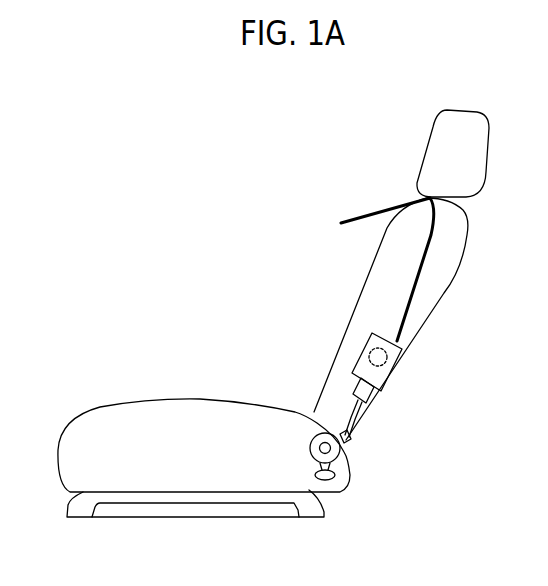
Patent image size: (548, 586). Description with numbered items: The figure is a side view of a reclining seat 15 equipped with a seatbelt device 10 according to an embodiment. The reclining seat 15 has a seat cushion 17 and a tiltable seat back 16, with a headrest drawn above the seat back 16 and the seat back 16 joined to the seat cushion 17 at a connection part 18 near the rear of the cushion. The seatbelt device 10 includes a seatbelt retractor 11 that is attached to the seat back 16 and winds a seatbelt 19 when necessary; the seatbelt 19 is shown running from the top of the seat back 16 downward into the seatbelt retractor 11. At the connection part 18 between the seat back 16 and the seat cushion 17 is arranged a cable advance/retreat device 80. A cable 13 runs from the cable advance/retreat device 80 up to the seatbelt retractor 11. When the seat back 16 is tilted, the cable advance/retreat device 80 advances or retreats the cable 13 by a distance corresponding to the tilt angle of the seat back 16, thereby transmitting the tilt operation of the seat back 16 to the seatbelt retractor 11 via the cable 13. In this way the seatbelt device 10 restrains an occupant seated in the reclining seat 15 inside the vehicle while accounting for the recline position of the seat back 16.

The seatbelt device 10 is at (482, 214).
The seatbelt retractor 11 is at (404, 342).
The cable 13 is at (353, 420).
The reclining seat 15 is at (414, 142).
The seat back 16 is at (383, 275).
The seat cushion 17 is at (192, 413).
The connection part 18 is at (330, 452).
The seatbelt 19 is at (358, 212).
The cable advance/retreat device 80 is at (352, 456).